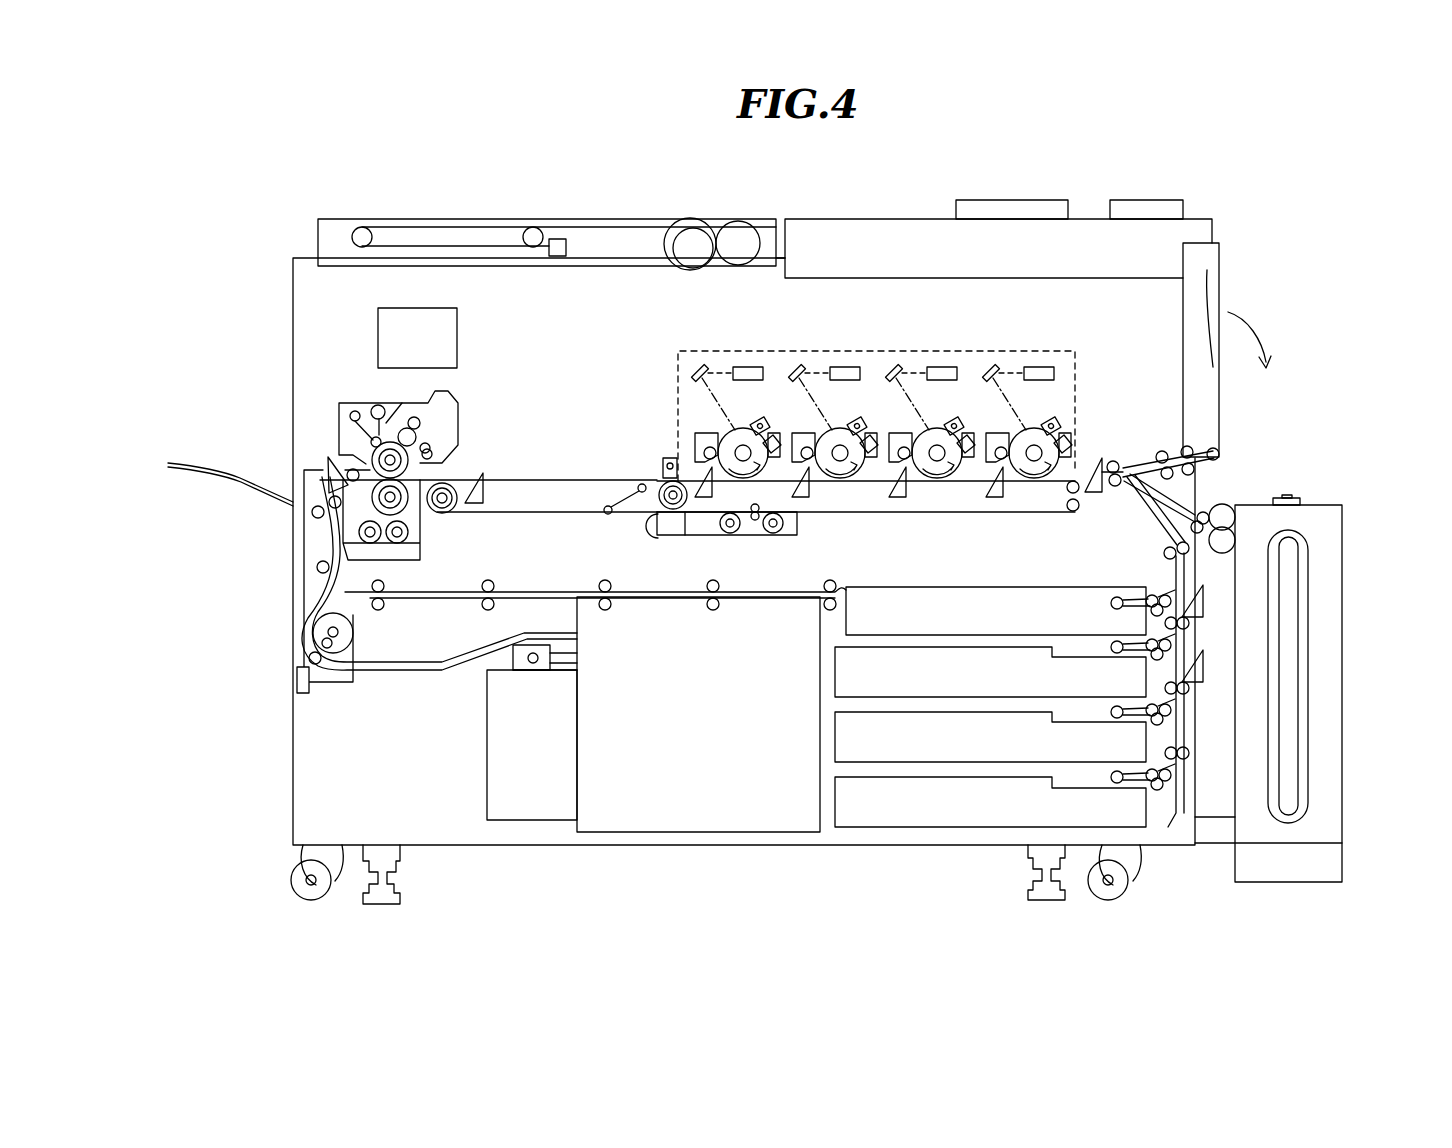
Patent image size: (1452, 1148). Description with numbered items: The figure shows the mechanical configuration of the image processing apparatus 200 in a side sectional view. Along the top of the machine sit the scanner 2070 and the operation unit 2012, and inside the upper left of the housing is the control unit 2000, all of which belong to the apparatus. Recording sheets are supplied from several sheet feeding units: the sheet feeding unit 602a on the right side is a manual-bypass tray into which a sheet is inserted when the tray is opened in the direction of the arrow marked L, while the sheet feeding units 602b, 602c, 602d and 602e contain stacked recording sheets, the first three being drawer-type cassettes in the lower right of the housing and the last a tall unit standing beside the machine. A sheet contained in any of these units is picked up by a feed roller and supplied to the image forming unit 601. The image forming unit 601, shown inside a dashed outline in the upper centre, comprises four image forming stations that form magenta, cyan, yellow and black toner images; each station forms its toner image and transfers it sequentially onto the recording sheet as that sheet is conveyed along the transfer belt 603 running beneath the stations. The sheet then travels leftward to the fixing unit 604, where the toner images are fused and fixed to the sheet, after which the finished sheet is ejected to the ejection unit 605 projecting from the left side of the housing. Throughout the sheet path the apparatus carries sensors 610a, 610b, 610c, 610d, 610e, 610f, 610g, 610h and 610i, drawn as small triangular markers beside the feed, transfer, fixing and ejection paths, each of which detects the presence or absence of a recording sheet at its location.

The image processing apparatus 200 is at (270, 133).
The scanner 2070 is at (496, 219).
The operation unit 2012 is at (1013, 199).
The control unit 2000 is at (459, 338).
The fixing unit 604 is at (458, 412).
The sensor 610c is at (330, 455).
The sensor 610d is at (487, 472).
The ejection unit 605 is at (193, 478).
The transfer belt 603 is at (870, 515).
The image forming unit 601 is at (1013, 350).
The sensor 610e is at (703, 500).
The sensor 610f is at (805, 500).
The sensor 610g is at (900, 500).
The sensor 610h is at (997, 500).
The sensor 610i is at (1095, 496).
The sheet feeding unit 602a is at (1207, 290).
The sheet feeding unit 602e is at (1325, 505).
The sheet feeding unit 602b is at (835, 672).
The sheet feeding unit 602c is at (835, 737).
The sheet feeding unit 602d is at (835, 802).
The sensor 610a is at (1205, 600).
The sensor 610b is at (1205, 665).